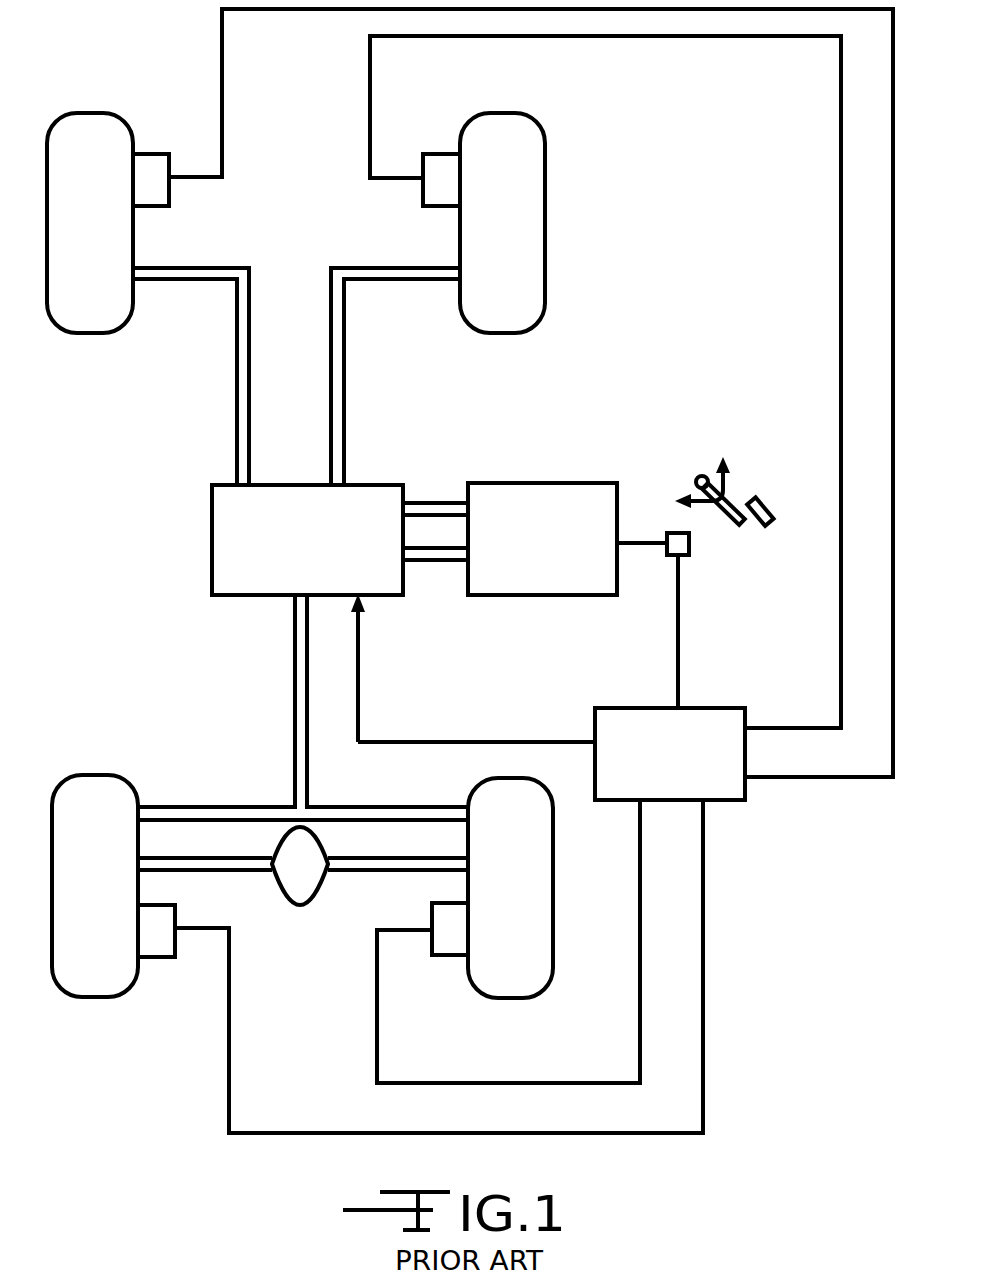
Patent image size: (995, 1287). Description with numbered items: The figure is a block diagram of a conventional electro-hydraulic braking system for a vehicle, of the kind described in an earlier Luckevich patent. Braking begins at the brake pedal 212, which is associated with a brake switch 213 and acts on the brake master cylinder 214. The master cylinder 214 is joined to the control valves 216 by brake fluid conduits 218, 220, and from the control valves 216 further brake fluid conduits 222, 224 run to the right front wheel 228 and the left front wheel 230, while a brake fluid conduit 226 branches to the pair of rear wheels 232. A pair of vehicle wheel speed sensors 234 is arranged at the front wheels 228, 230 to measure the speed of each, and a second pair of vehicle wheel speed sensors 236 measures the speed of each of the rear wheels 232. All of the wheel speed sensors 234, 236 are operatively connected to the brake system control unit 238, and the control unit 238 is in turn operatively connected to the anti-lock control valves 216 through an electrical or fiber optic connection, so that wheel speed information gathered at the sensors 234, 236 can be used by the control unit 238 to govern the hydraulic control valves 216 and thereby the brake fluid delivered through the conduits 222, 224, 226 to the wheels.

The brake pedal 212 is at (733, 502).
The brake switch 213 is at (668, 532).
The brake master cylinder 214 is at (545, 483).
The control valves 216 is at (212, 542).
The brake fluid conduit 218 is at (430, 490).
The brake fluid conduit 220 is at (433, 566).
The brake fluid conduit 222 is at (345, 375).
The brake fluid conduit 224 is at (237, 409).
The brake fluid conduit 226 is at (308, 785).
The right front wheel 228 is at (545, 200).
The left front wheel 230 is at (102, 112).
The rear wheels 232 is at (112, 775).
The vehicle wheel speed sensors 234 is at (150, 154).
The vehicle wheel speed sensors 236 is at (150, 960).
The brake system control unit 238 is at (716, 708).